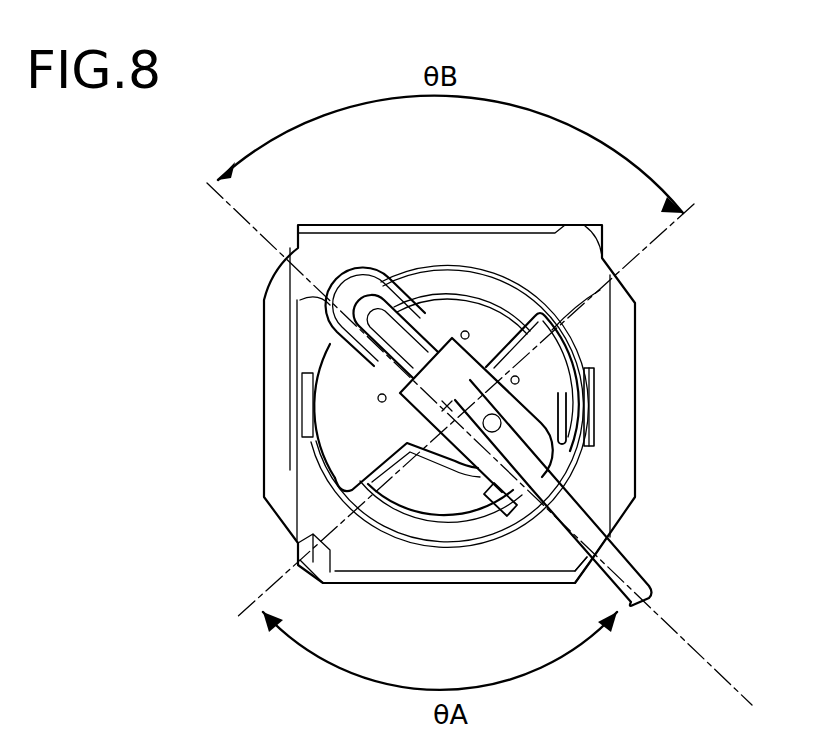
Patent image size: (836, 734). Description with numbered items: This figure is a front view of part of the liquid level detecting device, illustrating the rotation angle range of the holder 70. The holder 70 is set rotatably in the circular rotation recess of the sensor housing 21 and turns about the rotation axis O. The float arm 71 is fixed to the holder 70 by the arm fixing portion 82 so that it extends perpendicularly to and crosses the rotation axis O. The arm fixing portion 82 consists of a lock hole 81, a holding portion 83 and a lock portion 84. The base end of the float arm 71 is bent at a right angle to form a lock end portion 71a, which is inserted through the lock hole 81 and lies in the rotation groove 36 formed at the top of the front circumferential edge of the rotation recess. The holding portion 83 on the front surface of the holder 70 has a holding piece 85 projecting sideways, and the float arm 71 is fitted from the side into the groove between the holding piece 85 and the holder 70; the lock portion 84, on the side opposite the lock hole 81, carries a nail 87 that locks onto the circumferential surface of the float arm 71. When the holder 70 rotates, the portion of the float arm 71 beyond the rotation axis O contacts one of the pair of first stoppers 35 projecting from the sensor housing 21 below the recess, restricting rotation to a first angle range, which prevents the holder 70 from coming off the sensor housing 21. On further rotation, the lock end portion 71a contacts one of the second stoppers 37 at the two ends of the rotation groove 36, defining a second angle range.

The sensor housing 21 is at (637, 318).
The first stoppers 35 is at (327, 575).
The rotation groove 36 is at (483, 282).
The second stoppers 37 is at (320, 305).
The holder 70 is at (313, 382).
The rotation axis O is at (447, 406).
The float arm 71 is at (630, 566).
The lock end portion 71a is at (378, 308).
The lock hole 81 is at (345, 338).
The arm fixing portion 82 is at (527, 390).
The holding portion 83 is at (530, 420).
The lock portion 84 is at (596, 452).
The holding piece 85 is at (360, 470).
The nail 87 is at (503, 517).